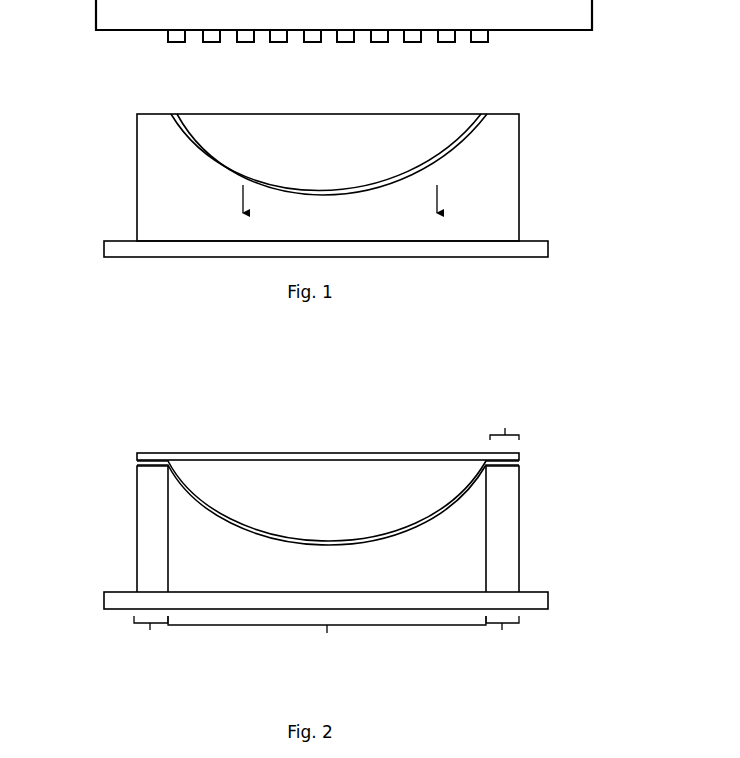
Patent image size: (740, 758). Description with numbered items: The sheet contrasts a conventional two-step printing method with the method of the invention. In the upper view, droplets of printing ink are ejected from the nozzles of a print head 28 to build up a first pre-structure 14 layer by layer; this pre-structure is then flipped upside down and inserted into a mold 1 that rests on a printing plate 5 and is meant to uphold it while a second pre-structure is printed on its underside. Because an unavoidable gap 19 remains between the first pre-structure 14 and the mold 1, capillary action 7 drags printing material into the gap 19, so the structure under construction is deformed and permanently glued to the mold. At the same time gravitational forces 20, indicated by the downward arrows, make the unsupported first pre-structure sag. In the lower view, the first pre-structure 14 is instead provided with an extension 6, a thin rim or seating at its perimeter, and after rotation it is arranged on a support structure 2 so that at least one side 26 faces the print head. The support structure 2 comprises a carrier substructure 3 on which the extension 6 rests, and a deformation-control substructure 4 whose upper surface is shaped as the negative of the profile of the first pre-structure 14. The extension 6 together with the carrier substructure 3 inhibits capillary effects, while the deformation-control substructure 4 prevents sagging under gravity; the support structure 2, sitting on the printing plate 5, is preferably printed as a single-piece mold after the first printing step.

In FIG. 1, the print head 28 is at (565, 17).
In FIG. 1, the capillary action 7 is at (172, 112).
In FIG. 1, the first pre-structure 14 is at (224, 130).
In FIG. 2, the first pre-structure 14 is at (223, 481).
In FIG. 1, the gap 19 is at (200, 152).
In FIG. 2, the gap 19 is at (137, 468).
In FIG. 1, the mold 1 is at (150, 182).
In FIG. 1, the printing plate 5 is at (148, 248).
In FIG. 2, the printing plate 5 is at (148, 601).
In FIG. 1, the gravitational forces 20 is at (340, 211).
In FIG. 2, the at least one side 26 is at (275, 453).
In FIG. 2, the extension 6 is at (504, 420).
In FIG. 2, the support structure 2 is at (150, 534).
In FIG. 2, the carrier substructure 3 is at (326, 640).
In FIG. 2, the deformation-control substructure 4 is at (327, 643).